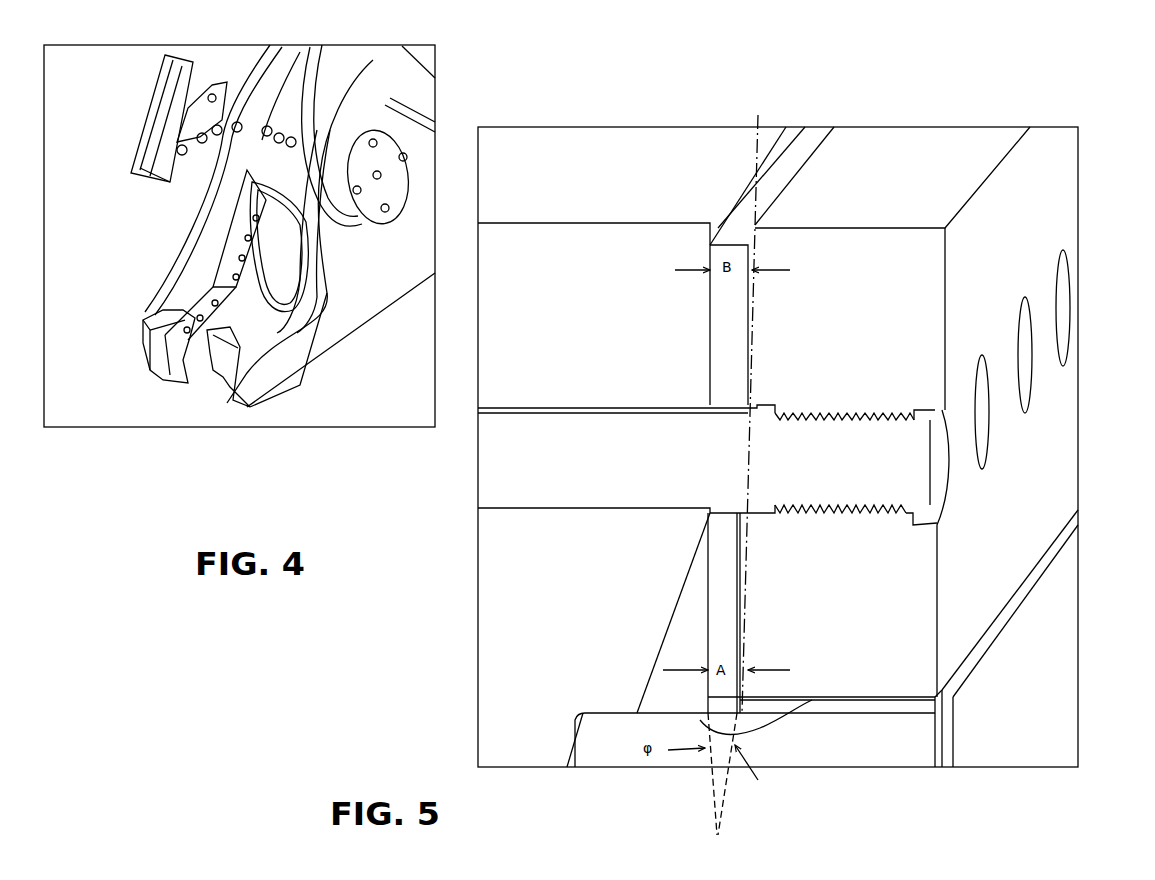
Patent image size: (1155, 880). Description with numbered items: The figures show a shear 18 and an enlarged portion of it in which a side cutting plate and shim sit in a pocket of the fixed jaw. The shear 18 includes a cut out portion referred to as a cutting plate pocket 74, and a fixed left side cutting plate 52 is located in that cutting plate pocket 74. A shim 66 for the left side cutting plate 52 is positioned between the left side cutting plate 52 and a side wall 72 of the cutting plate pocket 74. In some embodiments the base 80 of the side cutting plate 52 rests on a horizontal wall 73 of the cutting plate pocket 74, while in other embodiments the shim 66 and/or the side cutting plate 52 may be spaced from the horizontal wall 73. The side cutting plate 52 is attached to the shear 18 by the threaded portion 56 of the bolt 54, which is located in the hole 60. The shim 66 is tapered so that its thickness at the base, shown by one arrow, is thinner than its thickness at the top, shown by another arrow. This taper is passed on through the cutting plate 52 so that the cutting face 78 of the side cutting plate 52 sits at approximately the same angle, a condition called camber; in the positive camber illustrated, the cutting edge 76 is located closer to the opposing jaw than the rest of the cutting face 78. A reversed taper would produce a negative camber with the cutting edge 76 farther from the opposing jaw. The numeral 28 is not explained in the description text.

In FIG. 4, the shear 18 is at (398, 270).
In FIG. 5, the shear 18 is at (563, 564).
In FIG. 4, the mounting block 28 is at (173, 382).
In FIG. 4, the left side cutting plate 52 is at (203, 383).
In FIG. 5, the left side cutting plate 52 is at (845, 332).
In FIG. 5, the bolt 54 is at (607, 464).
In FIG. 5, the threaded portion 56 is at (790, 420).
In FIG. 5, the hole 60 is at (945, 512).
In FIG. 5, the shim 66 is at (733, 238).
In FIG. 5, the side wall 72 is at (708, 562).
In FIG. 5, the horizontal wall 73 is at (705, 720).
In FIG. 5, the cutting plate pocket 74 is at (893, 92).
In FIG. 5, the cutting edge 76 is at (998, 172).
In FIG. 5, the cutting face 78 is at (988, 265).
In FIG. 5, the base 80 is at (842, 708).